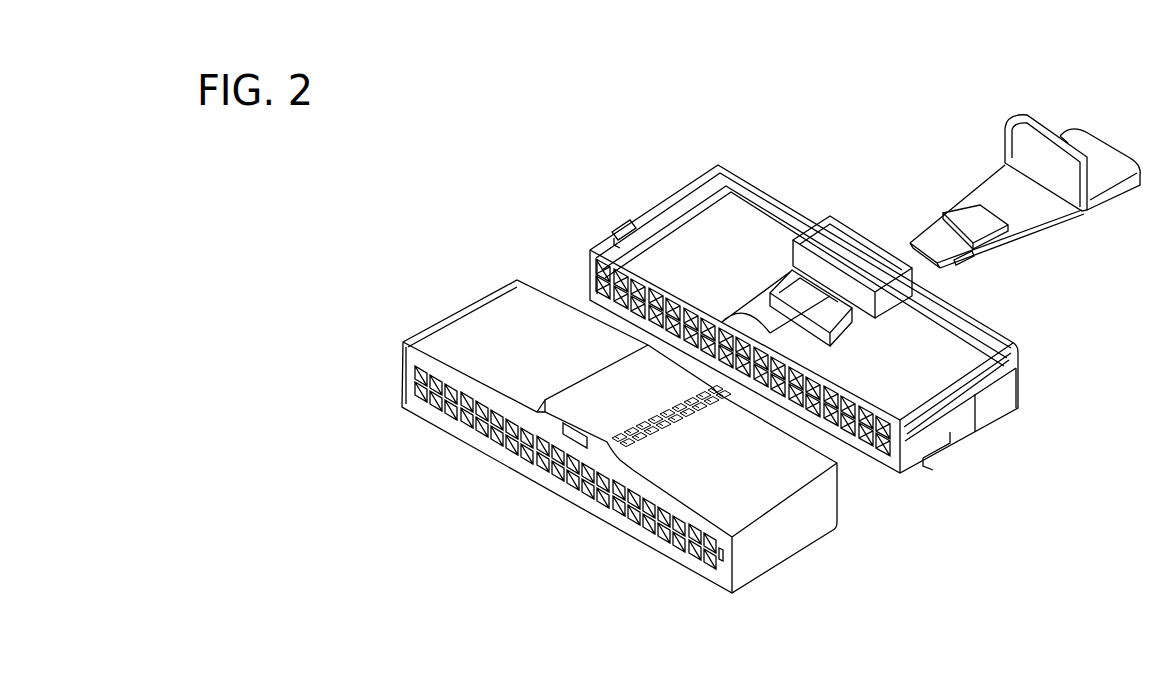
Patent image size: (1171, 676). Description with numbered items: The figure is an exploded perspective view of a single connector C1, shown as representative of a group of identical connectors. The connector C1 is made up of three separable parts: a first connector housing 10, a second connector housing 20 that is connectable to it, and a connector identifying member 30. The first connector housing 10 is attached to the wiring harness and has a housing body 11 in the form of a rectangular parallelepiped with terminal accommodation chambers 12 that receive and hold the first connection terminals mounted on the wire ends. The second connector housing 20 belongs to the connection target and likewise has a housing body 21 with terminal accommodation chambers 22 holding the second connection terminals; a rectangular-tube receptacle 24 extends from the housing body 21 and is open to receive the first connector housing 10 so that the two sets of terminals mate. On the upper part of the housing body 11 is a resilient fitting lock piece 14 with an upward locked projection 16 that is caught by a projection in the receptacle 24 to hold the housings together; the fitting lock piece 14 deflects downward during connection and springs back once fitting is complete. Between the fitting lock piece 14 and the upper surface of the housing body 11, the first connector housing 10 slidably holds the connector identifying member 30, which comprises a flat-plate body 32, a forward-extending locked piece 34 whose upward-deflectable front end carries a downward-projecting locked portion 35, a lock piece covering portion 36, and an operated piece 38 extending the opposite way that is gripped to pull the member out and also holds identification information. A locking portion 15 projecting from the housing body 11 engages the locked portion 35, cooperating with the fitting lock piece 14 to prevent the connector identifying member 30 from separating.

The connector C1 is at (546, 132).
The first connector housing 10 is at (673, 176).
The housing body 11 is at (650, 228).
The terminal accommodation chambers 12 is at (868, 452).
The fitting lock piece 14 is at (788, 274).
The locking portion 15 is at (758, 320).
The locked projection 16 is at (856, 265).
The second connector housing 20 is at (472, 289).
The housing body 21 is at (440, 320).
The terminal accommodation chambers 22 is at (663, 530).
The receptacle 24 is at (535, 296).
The connector identifying member 30 is at (943, 153).
The body 32 is at (992, 188).
The locked piece 34 is at (932, 234).
The locked portion 35 is at (948, 264).
The lock piece covering portion 36 is at (1028, 128).
The operated piece 38 is at (1100, 147).